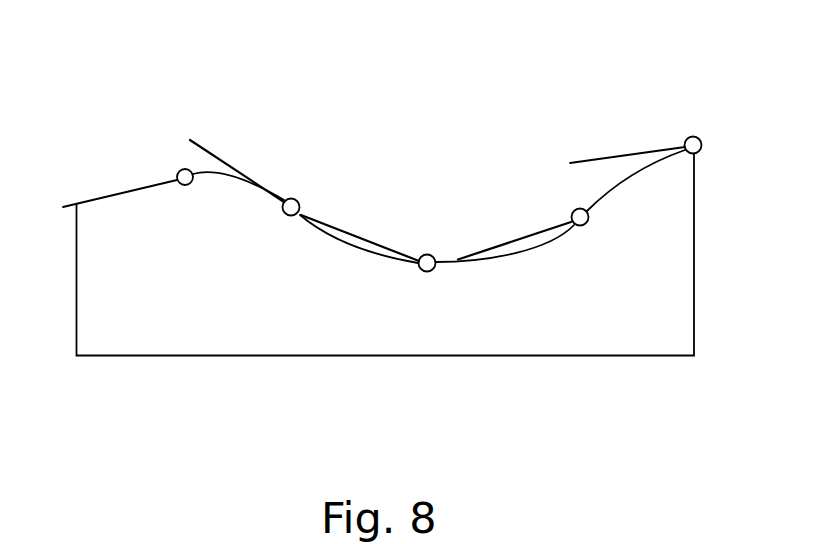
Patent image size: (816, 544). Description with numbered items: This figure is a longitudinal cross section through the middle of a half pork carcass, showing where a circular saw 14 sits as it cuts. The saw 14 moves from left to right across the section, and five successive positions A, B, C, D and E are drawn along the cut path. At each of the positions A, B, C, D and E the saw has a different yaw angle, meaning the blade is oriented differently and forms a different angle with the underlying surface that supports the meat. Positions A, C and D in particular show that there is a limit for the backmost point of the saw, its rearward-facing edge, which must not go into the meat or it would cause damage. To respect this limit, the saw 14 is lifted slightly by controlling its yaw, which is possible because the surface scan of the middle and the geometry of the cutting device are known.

The circular saw 14 is at (205, 148).
The saw position A is at (120, 209).
The saw position B is at (238, 199).
The saw position C is at (359, 246).
The saw position D is at (505, 251).
The saw position E is at (627, 179).